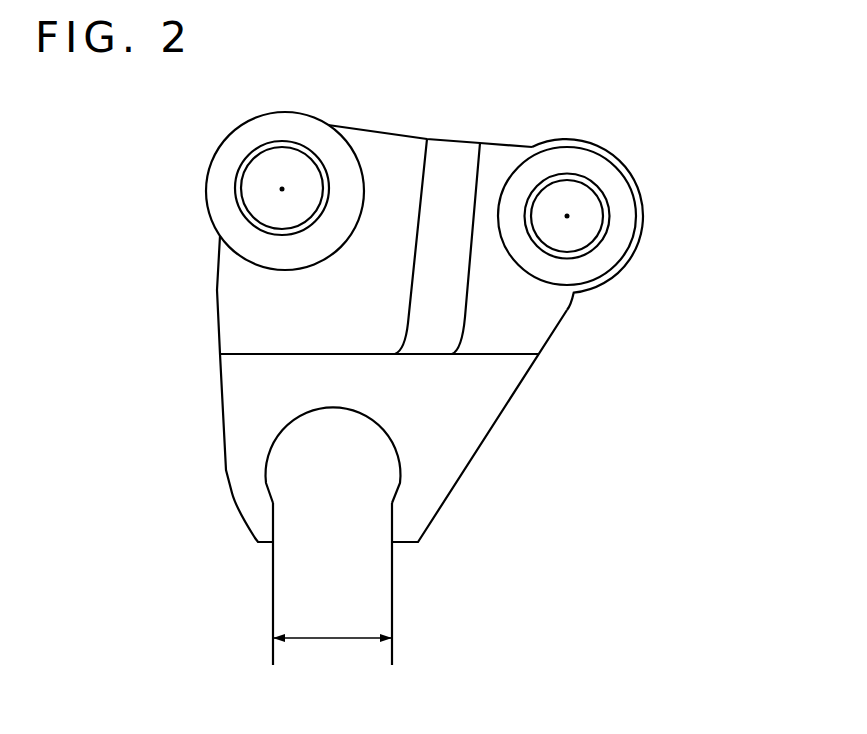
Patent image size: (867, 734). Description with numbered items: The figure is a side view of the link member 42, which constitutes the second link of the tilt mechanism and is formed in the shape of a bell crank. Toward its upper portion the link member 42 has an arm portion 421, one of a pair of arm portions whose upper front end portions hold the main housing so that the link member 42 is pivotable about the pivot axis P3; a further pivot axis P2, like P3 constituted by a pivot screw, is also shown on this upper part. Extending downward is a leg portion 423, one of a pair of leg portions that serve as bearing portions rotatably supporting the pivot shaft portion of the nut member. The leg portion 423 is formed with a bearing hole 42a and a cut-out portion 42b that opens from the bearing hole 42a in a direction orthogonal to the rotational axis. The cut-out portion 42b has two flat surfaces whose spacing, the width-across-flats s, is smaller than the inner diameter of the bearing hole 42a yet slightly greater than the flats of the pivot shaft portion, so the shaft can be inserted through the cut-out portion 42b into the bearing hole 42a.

The link member 42 is at (596, 121).
The arm portion 421 is at (543, 308).
The leg portion 423 is at (463, 435).
The pivot axis P3 is at (281, 188).
The pivot axis P2 is at (567, 216).
The bearing hole 42a is at (281, 447).
The cut-out portion 42b is at (274, 527).
The width-across-flats s is at (332, 648).